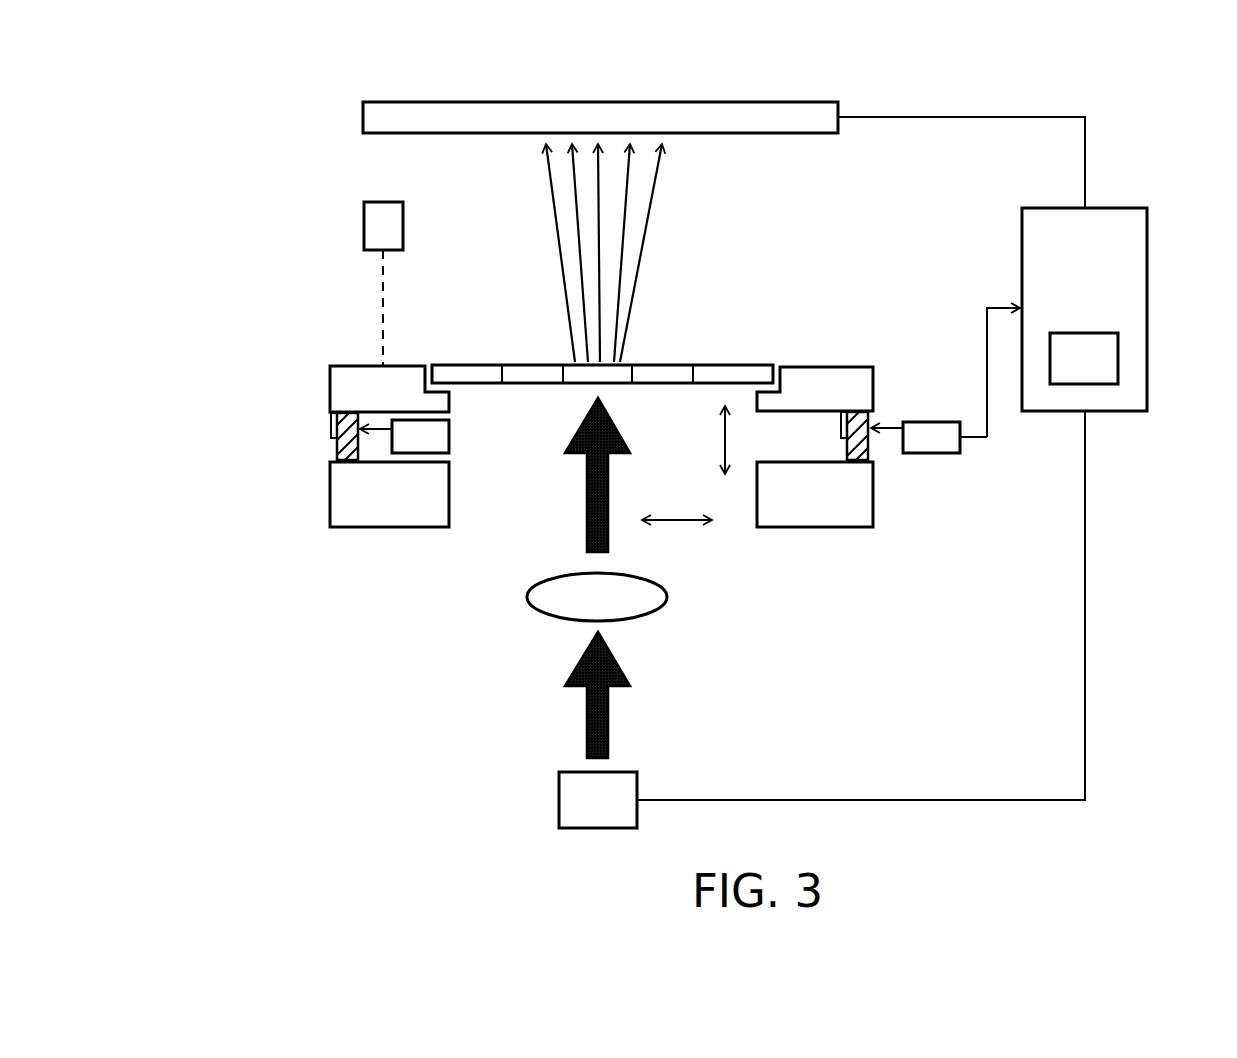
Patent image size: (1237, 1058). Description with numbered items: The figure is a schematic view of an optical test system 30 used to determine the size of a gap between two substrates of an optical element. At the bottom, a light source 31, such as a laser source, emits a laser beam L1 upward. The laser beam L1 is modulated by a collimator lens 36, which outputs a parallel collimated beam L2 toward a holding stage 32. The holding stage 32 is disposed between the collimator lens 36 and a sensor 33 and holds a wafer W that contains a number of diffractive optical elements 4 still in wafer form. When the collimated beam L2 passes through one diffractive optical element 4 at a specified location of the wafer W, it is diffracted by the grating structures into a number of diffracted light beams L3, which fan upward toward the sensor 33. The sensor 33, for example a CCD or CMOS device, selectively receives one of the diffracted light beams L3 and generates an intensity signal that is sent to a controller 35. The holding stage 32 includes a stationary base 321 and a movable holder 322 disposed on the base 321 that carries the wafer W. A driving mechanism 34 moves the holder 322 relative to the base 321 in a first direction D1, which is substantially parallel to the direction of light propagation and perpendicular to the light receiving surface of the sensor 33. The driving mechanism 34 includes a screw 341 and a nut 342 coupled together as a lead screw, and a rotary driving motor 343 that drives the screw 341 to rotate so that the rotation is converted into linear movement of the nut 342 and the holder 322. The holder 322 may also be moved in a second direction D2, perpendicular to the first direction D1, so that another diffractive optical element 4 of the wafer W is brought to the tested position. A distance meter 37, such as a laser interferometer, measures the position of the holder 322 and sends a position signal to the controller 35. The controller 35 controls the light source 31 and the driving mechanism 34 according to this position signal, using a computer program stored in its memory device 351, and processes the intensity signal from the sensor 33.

The optical test system 30 is at (280, 104).
The light source 31 is at (578, 800).
The holding stage 32 is at (312, 356).
The sensor 33 is at (762, 118).
The driving mechanism 34 is at (894, 406).
The controller 35 is at (1147, 268).
The collimator lens 36 is at (650, 597).
The distance meter 37 is at (387, 225).
The base 321 is at (350, 490).
The holder 322 is at (350, 388).
The screw 341 is at (868, 447).
The nut 342 is at (840, 424).
The driving motor 343 is at (945, 438).
The memory device 351 is at (1102, 358).
The diffractive optical element 4 is at (468, 362).
The wafer W is at (736, 362).
The laser beam L1 is at (597, 720).
The collimated beam L2 is at (597, 500).
The diffracted light beams L3 is at (560, 252).
The first direction D1 is at (698, 440).
The second direction D2 is at (677, 498).